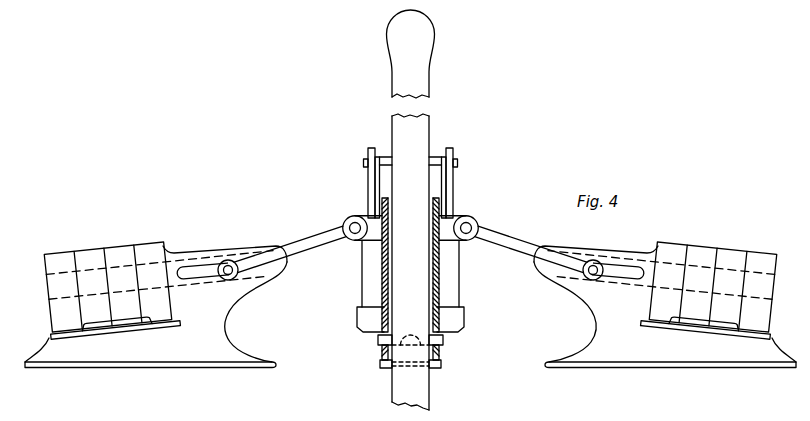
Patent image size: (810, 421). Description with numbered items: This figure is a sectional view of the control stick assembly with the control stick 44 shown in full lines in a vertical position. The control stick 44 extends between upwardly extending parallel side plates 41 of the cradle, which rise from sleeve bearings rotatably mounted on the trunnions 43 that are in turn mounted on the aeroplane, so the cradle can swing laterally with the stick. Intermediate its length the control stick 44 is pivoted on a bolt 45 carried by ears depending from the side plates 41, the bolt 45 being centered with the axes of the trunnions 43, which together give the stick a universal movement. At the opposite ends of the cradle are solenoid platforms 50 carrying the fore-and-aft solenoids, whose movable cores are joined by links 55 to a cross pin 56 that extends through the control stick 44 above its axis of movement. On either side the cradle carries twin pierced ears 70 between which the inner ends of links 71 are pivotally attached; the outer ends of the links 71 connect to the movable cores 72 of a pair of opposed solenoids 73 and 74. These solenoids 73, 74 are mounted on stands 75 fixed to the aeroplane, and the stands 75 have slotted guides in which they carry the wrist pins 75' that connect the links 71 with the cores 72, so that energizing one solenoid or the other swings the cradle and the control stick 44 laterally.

The side plates 41 is at (382, 290).
The trunnions 43 is at (442, 364).
The control stick 44 is at (429, 140).
The bolt 45 is at (440, 341).
The solenoid platforms 50 is at (459, 320).
The links 55 is at (368, 188).
The cross pin 56 is at (458, 164).
The twin pierced ears 70 is at (366, 217).
The links 71 is at (315, 243).
The movable cores 72 is at (186, 263).
The solenoid 73 is at (106, 254).
The solenoid 74 is at (738, 262).
The stands 75 is at (410, 307).
The wrist pins 75' is at (422, 244).